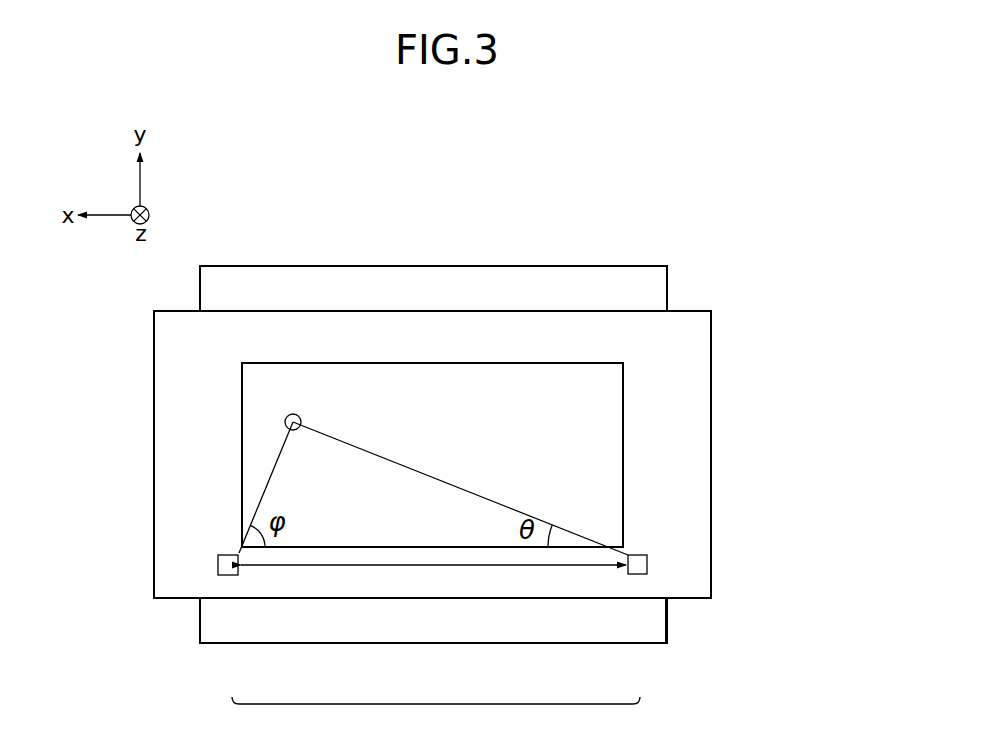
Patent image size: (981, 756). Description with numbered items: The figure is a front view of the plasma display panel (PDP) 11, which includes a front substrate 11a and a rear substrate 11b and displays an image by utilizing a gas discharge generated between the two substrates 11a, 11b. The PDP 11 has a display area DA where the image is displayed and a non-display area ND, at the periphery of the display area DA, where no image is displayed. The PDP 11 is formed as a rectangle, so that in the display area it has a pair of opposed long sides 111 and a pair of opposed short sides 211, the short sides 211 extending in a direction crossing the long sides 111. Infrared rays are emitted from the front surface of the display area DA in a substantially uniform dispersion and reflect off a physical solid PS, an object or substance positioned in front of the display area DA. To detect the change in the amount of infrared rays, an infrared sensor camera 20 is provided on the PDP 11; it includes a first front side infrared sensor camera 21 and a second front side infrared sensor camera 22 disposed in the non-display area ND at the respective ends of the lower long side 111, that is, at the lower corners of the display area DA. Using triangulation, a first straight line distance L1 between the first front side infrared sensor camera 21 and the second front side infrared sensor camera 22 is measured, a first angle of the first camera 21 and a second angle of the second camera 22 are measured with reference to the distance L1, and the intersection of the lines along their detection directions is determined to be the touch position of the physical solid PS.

The plasma display panel 11 is at (707, 245).
The front substrate 11a is at (712, 519).
The rear substrate 11b is at (667, 622).
The long side 111 is at (445, 309).
The short side 211 is at (198, 297).
The infrared sensor camera 20 is at (436, 717).
The first front side infrared sensor camera 21 is at (228, 576).
The second front side infrared sensor camera 22 is at (638, 576).
The display area DA is at (241, 487).
The non-display area ND is at (171, 535).
The physical solid PS is at (285, 422).
The first straight line distance L1 is at (433, 579).